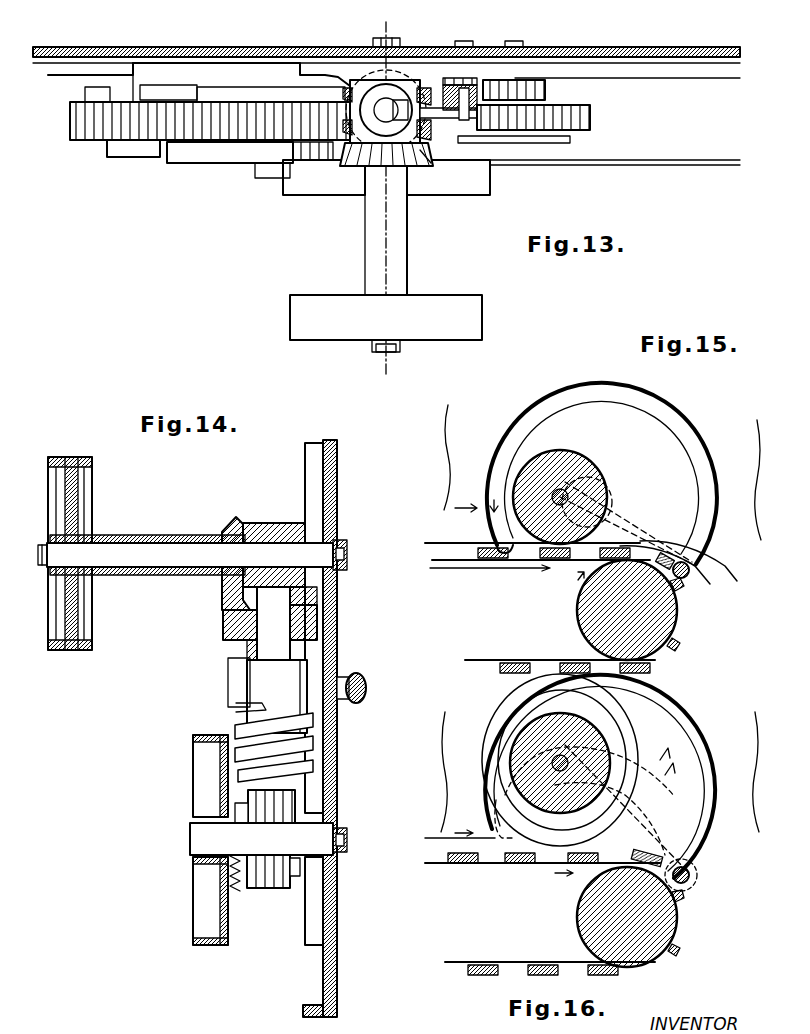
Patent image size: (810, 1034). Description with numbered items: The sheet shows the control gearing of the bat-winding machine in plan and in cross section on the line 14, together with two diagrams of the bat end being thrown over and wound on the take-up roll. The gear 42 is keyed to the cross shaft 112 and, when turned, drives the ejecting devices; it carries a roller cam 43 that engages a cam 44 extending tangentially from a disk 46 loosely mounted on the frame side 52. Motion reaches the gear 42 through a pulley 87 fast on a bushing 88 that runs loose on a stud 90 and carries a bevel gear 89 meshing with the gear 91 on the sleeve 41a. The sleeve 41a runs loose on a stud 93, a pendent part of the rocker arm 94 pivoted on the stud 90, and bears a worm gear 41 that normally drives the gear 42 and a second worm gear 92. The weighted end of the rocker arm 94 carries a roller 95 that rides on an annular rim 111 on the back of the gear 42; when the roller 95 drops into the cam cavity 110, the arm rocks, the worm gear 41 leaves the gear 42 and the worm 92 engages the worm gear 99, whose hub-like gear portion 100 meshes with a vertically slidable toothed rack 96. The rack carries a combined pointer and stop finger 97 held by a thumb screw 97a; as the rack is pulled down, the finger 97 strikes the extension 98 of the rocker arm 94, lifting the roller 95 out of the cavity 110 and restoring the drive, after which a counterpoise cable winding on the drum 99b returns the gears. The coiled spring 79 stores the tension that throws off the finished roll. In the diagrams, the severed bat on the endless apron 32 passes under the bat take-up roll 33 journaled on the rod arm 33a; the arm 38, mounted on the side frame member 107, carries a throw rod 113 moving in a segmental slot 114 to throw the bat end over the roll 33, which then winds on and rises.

In FIG. 13, the axis / centre line of vertical shaft 14 is at (376, 198).
In FIG. 16, the endless apron 32 is at (525, 880).
In FIG. 15, the bat take-up roll 33 is at (592, 456).
In FIG. 16, the bat take-up roll 33 is at (560, 763).
In FIG. 15, the rod arm 33a is at (572, 493).
In FIG. 15, the arm 38 is at (672, 533).
In FIG. 16, the arm 38 is at (688, 870).
In FIG. 14, the worm gear 41 is at (250, 730).
In FIG. 14, the sleeve 41a is at (277, 696).
In FIG. 13, the gear 42 is at (100, 125).
In FIG. 14, the gear 42 is at (268, 888).
In FIG. 13, the roller cam 43 is at (117, 156).
In FIG. 14, the roller cam 43 is at (229, 686).
In FIG. 13, the cam 44 is at (242, 160).
In FIG. 14, the cam 44 is at (242, 806).
In FIG. 13, the disk 46 is at (333, 194).
In FIG. 14, the disk 46 is at (195, 924).
In FIG. 13, the frame side 52 is at (562, 44).
In FIG. 14, the frame side 52 is at (328, 508).
In FIG. 14, the coiled spring 79 is at (200, 843).
In FIG. 13, the pulley 87 is at (386, 323).
In FIG. 14, the pulley 87 is at (90, 461).
In FIG. 13, the bushing 88 is at (407, 258).
In FIG. 14, the bushing 88 is at (142, 538).
In FIG. 13, the bevel gear 89 is at (415, 166).
In FIG. 14, the bevel gear 89 is at (228, 523).
In FIG. 14, the stud 90 is at (192, 555).
In FIG. 13, the gear 91 is at (433, 158).
In FIG. 14, the gear 91 is at (224, 602).
In FIG. 14, the worm gear 92 is at (224, 627).
In FIG. 14, the stud 93 is at (287, 623).
In FIG. 13, the rocker arm 94 is at (348, 84).
In FIG. 14, the rocker arm 94 is at (276, 524).
In FIG. 13, the roller 95 is at (135, 96).
In FIG. 13, the toothed rack 96 is at (443, 90).
In FIG. 13, the pointer and stop finger 97 is at (502, 90).
In FIG. 13, the thumb screw 97a is at (460, 72).
In FIG. 13, the extension 98 is at (447, 128).
In FIG. 13, the worm gear 99 is at (590, 117).
In FIG. 13, the drum 99b is at (556, 141).
In FIG. 13, the hub-like gear portion 100 is at (546, 90).
In FIG. 15, the side frame member 107 is at (581, 502).
In FIG. 16, the side frame member 107 is at (544, 791).
In FIG. 13, the cam cavity 110 is at (116, 94).
In FIG. 13, the annular rim 111 is at (270, 94).
In FIG. 14, the annular rim 111 is at (295, 874).
In FIG. 14, the cross shaft 112 is at (370, 670).
In FIG. 15, the throw rod 113 is at (692, 566).
In FIG. 16, the throw rod 113 is at (692, 878).
In FIG. 15, the segmental slot 114 is at (498, 466).
In FIG. 16, the segmental slot 114 is at (701, 729).